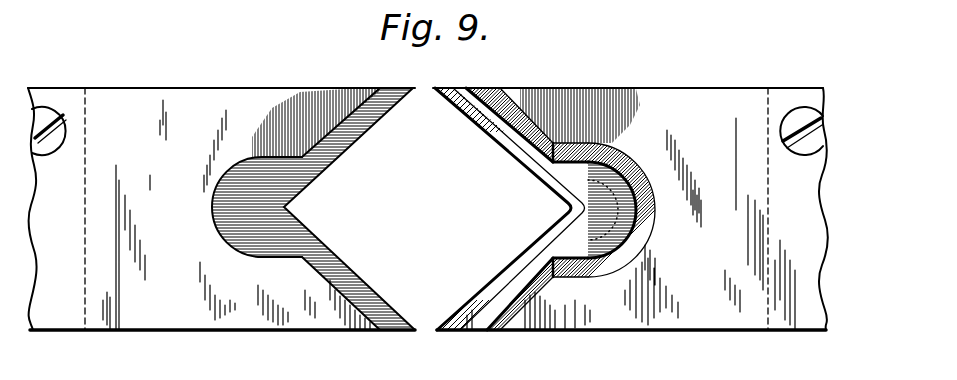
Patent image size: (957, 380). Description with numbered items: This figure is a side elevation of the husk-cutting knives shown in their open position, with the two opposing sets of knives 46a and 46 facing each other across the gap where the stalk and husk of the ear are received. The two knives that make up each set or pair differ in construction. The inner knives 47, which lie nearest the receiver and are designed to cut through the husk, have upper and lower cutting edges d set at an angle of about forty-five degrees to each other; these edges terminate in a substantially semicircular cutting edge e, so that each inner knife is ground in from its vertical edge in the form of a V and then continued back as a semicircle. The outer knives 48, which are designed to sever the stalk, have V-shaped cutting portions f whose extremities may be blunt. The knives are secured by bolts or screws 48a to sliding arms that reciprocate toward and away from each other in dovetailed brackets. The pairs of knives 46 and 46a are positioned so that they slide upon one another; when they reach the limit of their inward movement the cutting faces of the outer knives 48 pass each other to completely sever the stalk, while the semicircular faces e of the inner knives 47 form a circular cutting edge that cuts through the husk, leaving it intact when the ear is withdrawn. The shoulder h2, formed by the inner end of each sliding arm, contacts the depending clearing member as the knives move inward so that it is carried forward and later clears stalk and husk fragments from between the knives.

The cutting-knives 46a is at (221, 191).
The cutting-knives 46 is at (630, 190).
The bolts or screws 48a is at (53, 134).
The outer knives 48 is at (272, 241).
The inner knives 47 is at (449, 207).
The shoulder h2 is at (781, 197).
The upper and lower cutting edges d is at (362, 100).
The semicircular cutting edge e is at (214, 203).
The V-shaped cutting portions f is at (302, 178).